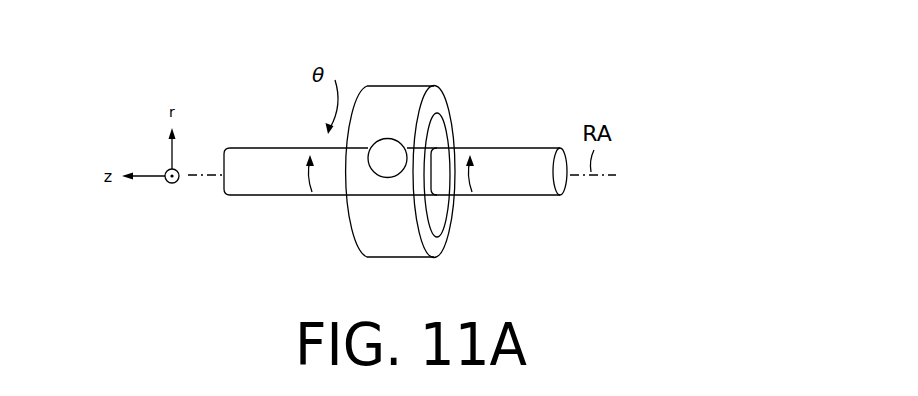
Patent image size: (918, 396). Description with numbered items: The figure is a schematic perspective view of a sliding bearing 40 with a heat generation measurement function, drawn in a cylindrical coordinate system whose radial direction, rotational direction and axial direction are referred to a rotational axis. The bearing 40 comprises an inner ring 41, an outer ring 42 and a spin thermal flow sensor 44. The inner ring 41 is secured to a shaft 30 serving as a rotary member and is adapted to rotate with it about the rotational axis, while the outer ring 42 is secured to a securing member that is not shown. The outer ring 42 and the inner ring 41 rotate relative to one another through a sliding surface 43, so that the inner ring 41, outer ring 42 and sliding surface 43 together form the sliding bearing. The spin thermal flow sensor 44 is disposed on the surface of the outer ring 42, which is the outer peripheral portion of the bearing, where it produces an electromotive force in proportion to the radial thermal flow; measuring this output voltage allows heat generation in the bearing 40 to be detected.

The shaft 30 is at (252, 150).
The sliding bearing with heat generation measurement function 40 is at (557, 84).
The inner ring 41 is at (439, 139).
The outer ring 42 is at (439, 106).
The sliding surface 43 is at (442, 246).
The spin thermal flow sensor 44 is at (348, 231).